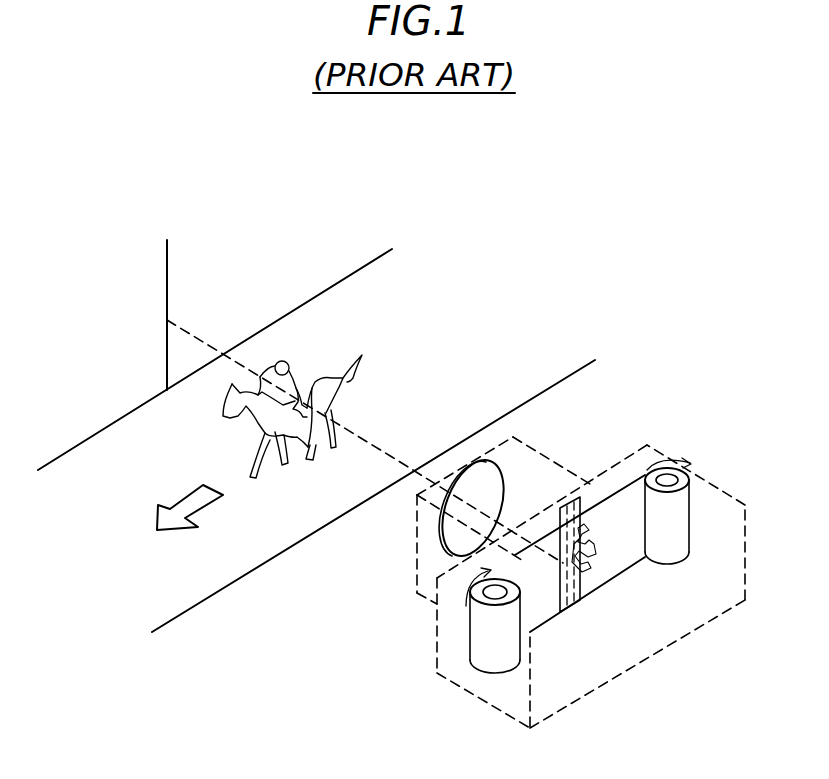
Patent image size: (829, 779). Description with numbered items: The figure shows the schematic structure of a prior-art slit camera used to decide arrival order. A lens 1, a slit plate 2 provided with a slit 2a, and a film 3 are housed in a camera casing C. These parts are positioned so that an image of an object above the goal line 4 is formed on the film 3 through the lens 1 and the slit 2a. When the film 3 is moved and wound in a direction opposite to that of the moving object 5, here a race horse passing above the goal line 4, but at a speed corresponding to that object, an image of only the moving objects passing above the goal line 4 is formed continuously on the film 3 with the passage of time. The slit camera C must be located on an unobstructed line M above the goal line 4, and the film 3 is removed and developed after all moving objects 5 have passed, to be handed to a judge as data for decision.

The lens 1 is at (495, 480).
The slit plate 2 is at (583, 498).
The slit 2a is at (563, 507).
The film 3 is at (622, 555).
The goal line 4 is at (326, 492).
The moving object 5 is at (318, 382).
The unobstructed line M is at (397, 462).
The camera casing C is at (586, 701).